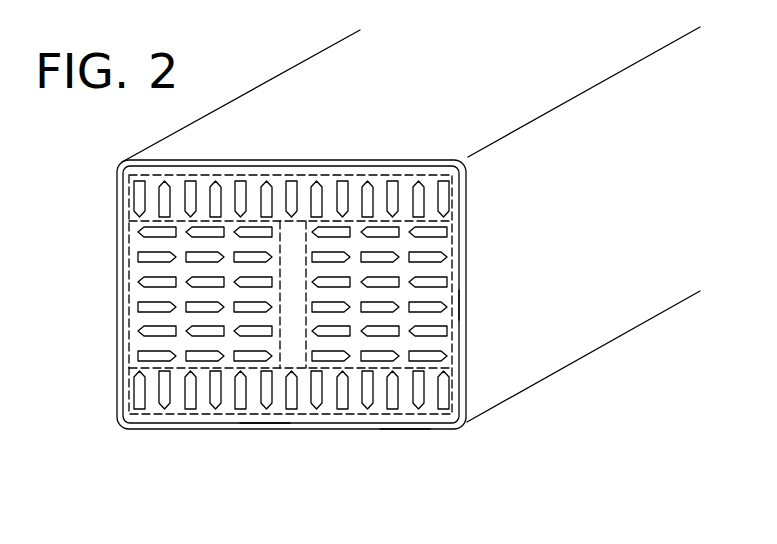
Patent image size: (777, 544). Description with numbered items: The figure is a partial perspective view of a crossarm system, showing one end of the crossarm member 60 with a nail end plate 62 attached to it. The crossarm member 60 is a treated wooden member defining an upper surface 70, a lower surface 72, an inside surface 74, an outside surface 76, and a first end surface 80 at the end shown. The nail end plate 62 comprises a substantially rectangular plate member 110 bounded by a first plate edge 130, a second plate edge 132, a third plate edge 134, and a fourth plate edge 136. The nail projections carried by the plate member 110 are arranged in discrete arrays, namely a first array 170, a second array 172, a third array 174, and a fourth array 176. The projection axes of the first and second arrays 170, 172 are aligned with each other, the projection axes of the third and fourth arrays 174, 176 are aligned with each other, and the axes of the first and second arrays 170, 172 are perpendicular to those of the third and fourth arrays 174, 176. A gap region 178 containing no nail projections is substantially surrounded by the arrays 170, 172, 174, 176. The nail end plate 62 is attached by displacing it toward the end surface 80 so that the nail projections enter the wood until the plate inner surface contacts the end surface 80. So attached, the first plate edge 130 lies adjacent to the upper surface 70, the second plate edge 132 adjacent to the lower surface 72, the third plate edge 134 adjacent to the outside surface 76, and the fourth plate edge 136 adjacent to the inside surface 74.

The crossarm member 60 is at (530, 362).
The nail end plate 62 is at (128, 209).
The upper surface 70 is at (618, 313).
The lower surface 72 is at (117, 350).
The inside surface 74 is at (403, 430).
The outside surface 76 is at (313, 105).
The first end surface 80 is at (462, 305).
The plate member 110 is at (138, 268).
The first plate edge 130 is at (455, 247).
The second plate edge 132 is at (128, 374).
The third plate edge 134 is at (375, 172).
The fourth plate edge 136 is at (265, 421).
The first array 170 is at (447, 268).
The second array 172 is at (137, 320).
The third array 174 is at (203, 180).
The fourth array 176 is at (177, 407).
The gap region 178 is at (293, 333).